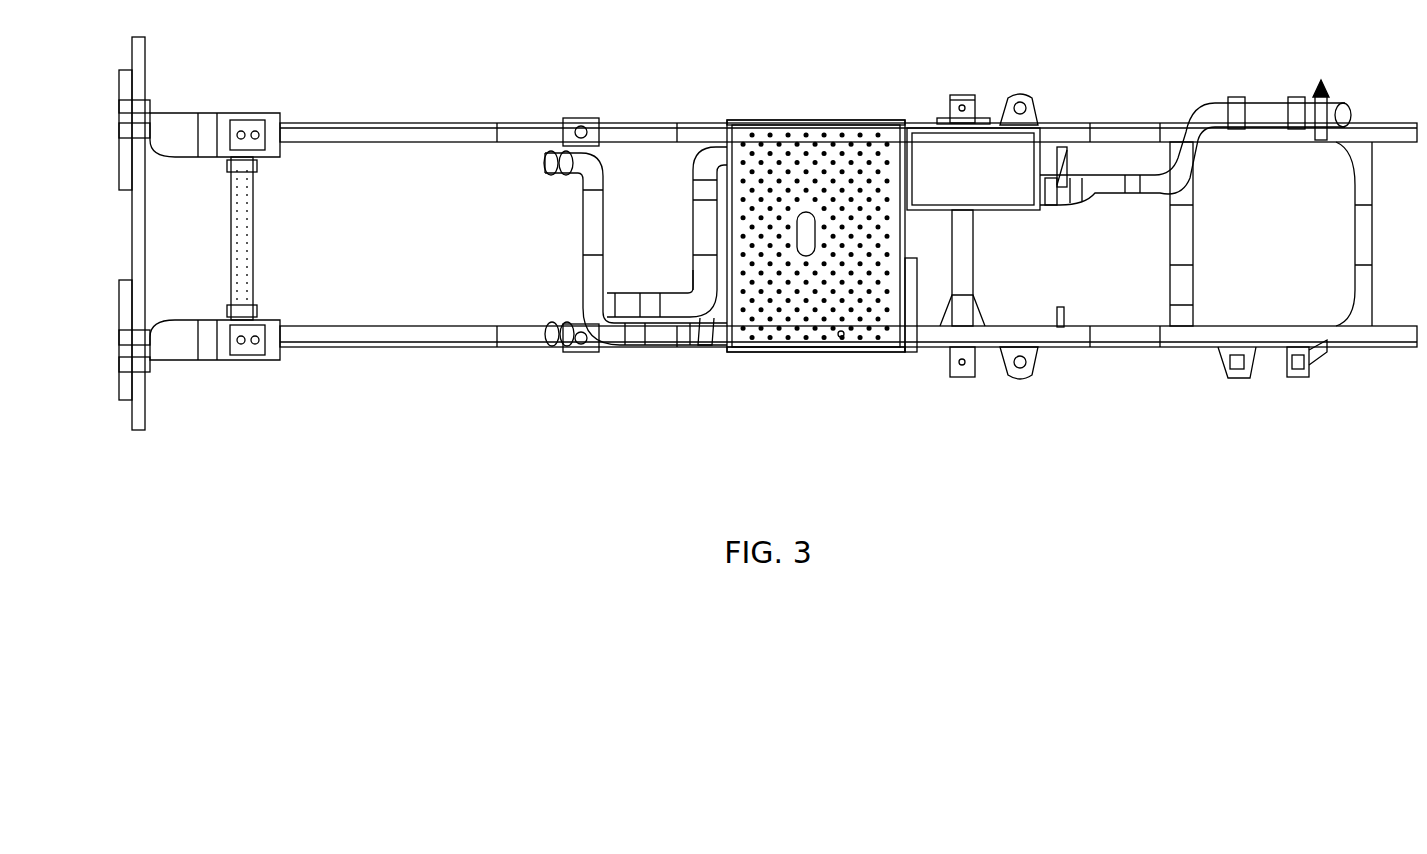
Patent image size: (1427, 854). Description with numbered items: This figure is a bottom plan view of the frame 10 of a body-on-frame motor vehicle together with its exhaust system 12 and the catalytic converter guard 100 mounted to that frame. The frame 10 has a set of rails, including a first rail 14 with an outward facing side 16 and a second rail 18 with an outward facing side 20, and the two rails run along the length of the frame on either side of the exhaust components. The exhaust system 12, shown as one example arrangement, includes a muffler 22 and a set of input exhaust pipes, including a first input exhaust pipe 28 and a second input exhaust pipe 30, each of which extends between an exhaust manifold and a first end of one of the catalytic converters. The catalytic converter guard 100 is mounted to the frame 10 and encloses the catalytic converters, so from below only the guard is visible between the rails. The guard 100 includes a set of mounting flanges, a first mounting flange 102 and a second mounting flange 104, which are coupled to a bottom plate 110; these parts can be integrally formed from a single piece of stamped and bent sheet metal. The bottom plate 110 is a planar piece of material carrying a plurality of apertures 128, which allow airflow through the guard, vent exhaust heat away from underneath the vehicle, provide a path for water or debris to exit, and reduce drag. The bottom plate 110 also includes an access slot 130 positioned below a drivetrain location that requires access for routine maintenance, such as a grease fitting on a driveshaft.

The frame 10 is at (290, 378).
The exhaust system 12 is at (541, 245).
The first rail 14 is at (376, 135).
The outward facing side 16 is at (430, 125).
The second rail 18 is at (395, 335).
The outward facing side 20 is at (425, 350).
The muffler 22 is at (1000, 198).
The first input exhaust pipe 28 is at (700, 228).
The second input exhaust pipe 30 is at (590, 225).
The catalytic converter guard 100 is at (752, 392).
The first mounting flange 102 is at (749, 120).
The second mounting flange 104 is at (812, 355).
The bottom plate 110 is at (813, 135).
The apertures 128 is at (843, 337).
The access slot 130 is at (799, 212).